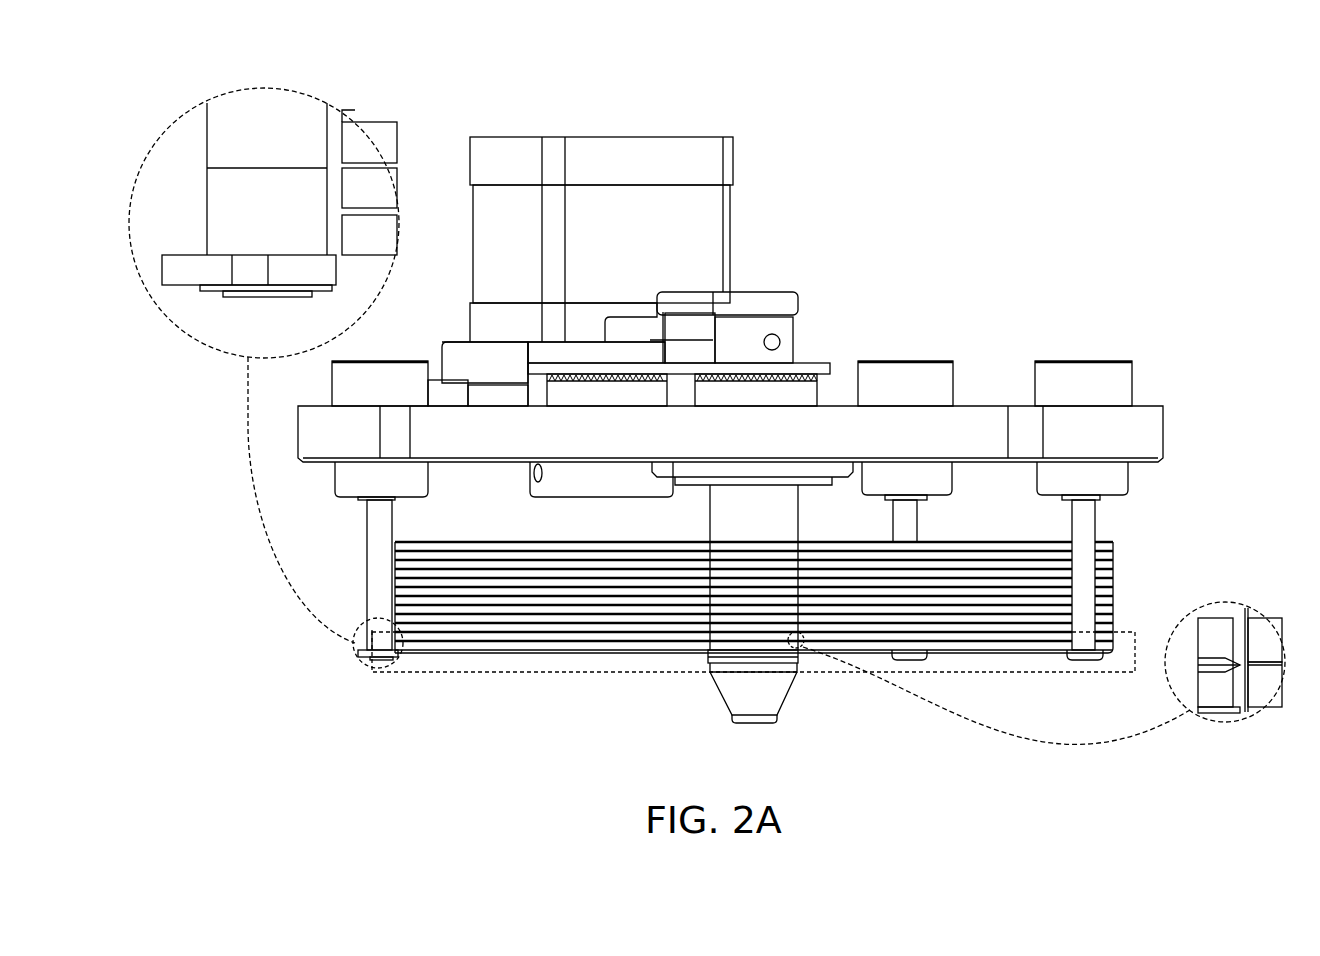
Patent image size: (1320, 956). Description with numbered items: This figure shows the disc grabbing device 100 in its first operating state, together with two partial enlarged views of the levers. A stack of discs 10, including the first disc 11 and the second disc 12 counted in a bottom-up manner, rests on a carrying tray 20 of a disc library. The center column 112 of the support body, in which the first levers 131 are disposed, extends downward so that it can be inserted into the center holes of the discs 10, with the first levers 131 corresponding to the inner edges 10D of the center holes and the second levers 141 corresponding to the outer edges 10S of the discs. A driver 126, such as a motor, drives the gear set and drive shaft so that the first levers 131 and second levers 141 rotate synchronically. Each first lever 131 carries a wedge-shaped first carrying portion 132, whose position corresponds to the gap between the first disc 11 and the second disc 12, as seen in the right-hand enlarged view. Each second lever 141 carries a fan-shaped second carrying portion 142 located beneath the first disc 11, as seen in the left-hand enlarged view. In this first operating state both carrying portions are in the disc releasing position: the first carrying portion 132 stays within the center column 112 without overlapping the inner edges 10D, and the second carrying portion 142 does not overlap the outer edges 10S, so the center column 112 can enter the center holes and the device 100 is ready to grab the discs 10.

The disc grabbing device 100 is at (453, 125).
The stacked discs 10 is at (1117, 540).
The outer edges of the discs 10S is at (338, 157).
The inner edges of the center holes of the discs 10D is at (1245, 648).
The first disc 11 is at (957, 651).
The second disc 12 is at (1007, 638).
The carrying tray 20 is at (1055, 673).
The center column 112 is at (800, 512).
The driver 126 is at (710, 220).
The first lever 131 is at (1218, 640).
The first carrying portion 132 is at (1222, 675).
The second lever 141 is at (380, 527).
The second carrying portion 142 is at (197, 268).